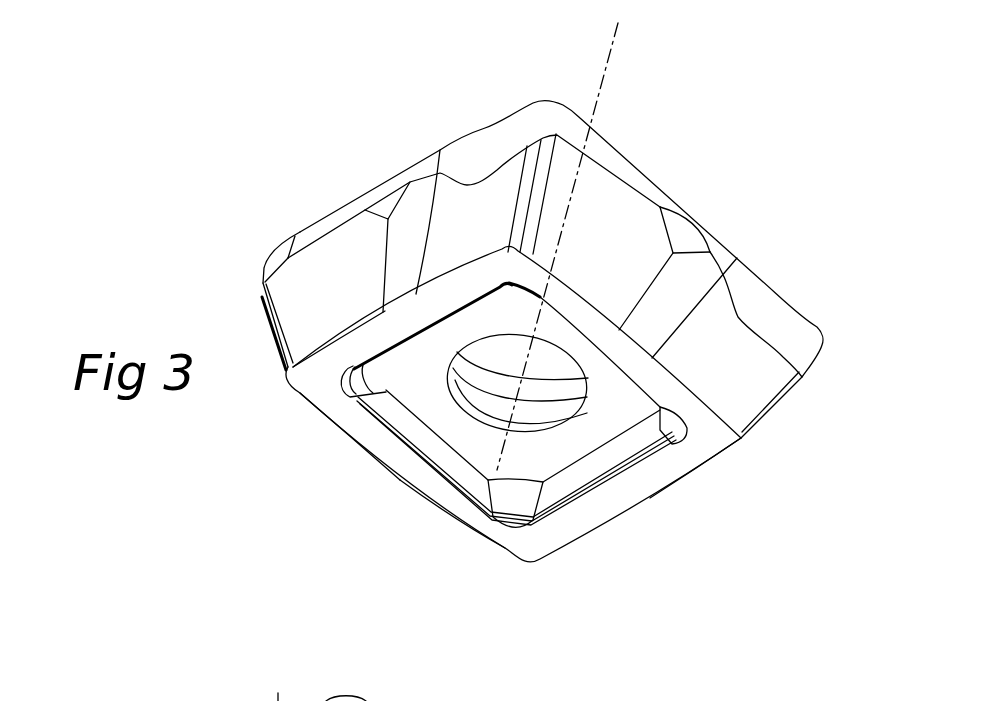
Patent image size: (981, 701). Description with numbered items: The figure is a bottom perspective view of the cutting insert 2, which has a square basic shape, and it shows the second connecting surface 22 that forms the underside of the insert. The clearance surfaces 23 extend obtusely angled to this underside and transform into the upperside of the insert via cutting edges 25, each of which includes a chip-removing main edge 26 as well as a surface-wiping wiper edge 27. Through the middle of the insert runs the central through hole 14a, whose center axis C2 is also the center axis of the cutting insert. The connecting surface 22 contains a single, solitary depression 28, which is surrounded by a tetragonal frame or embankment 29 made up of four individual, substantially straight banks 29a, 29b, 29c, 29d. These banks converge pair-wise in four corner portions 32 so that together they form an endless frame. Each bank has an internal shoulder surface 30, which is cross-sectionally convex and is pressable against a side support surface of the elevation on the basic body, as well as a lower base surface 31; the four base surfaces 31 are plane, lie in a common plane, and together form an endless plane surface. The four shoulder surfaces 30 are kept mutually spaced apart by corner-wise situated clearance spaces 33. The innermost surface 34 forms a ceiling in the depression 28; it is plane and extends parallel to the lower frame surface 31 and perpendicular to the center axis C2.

The cutting insert 2 is at (806, 270).
The central through hole 14a is at (517, 410).
The second connecting surface 22 is at (406, 497).
The clearance surfaces 23 is at (455, 229).
The cutting edges 25 is at (352, 196).
The chip-removing main edge 26 is at (670, 197).
The surface-wiping wiper edge 27 is at (493, 124).
The depression 28 is at (603, 368).
The tetragonal frame or embankment 29 is at (621, 529).
The bank 29a is at (432, 338).
The bank 29b is at (570, 326).
The bank 29c is at (573, 540).
The bank 29d is at (438, 515).
The internal shoulder surface 30 is at (425, 445).
The lower base surface 31 is at (370, 434).
The corner portions 32 is at (327, 396).
The clearance spaces 33 is at (513, 508).
The innermost surface 34 is at (632, 421).
The center axis of the hole C2 is at (617, 57).